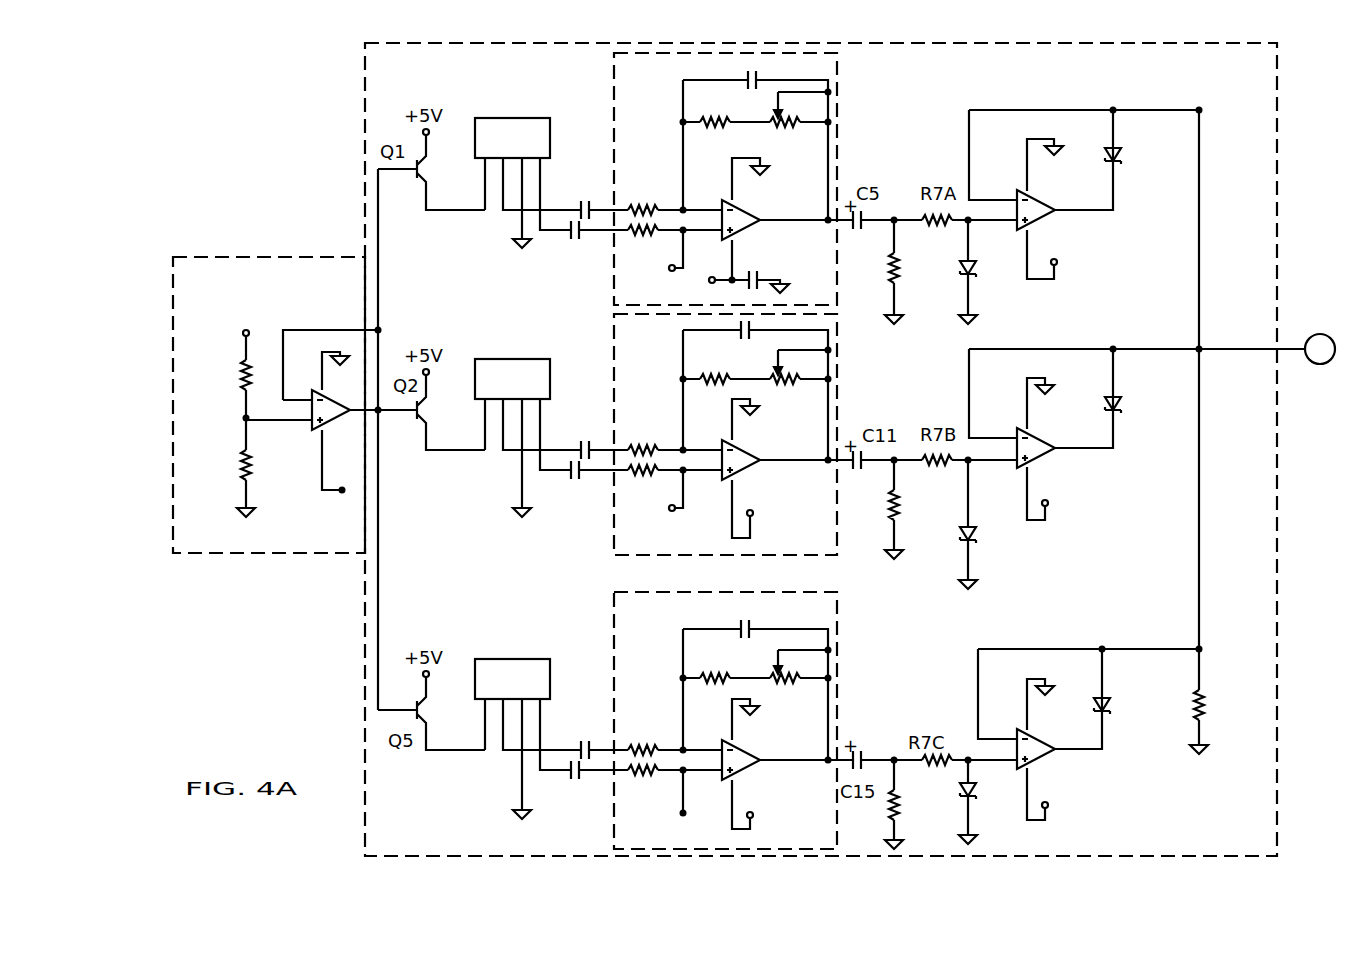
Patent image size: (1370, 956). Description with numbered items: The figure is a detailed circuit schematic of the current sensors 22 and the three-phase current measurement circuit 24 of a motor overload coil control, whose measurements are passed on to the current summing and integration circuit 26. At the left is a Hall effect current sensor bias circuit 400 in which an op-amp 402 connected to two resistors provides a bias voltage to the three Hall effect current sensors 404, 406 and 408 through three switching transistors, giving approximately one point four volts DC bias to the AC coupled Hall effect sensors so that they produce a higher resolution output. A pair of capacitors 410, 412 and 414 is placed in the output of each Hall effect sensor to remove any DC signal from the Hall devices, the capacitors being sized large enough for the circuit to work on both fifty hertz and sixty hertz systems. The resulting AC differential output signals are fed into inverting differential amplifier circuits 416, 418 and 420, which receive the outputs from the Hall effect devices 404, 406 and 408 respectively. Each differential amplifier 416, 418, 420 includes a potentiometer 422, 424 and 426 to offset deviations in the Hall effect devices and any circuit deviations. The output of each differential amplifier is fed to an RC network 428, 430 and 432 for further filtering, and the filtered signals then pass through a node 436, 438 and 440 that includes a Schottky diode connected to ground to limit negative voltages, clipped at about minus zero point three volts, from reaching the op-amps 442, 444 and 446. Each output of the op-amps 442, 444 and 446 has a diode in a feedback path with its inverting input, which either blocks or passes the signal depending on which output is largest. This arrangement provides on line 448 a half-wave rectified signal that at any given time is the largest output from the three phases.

The current sensor 22 is at (764, 449).
The three-phase current measurement circuit 24 is at (764, 449).
The current summing and integration circuit 26 is at (365, 62).
The Hall effect current sensor bias circuit 400 is at (277, 435).
The op-amp 402 is at (318, 432).
The Hall effect current sensor 404 is at (528, 118).
The Hall effect current sensor 406 is at (530, 359).
The Hall effect current sensor 408 is at (534, 659).
The pair of capacitors 410 is at (545, 250).
The pair of capacitors 412 is at (568, 505).
The pair of capacitors 414 is at (573, 810).
The inverting differential amplifier circuit 416 is at (713, 179).
The inverting differential amplifier circuit 418 is at (731, 434).
The inverting differential amplifier circuit 420 is at (724, 720).
The potentiometer 422 is at (806, 102).
The potentiometer 424 is at (806, 361).
The potentiometer 426 is at (806, 661).
The RC network 428 is at (862, 245).
The RC network 430 is at (882, 530).
The RC network 432 is at (878, 800).
The node 436 is at (950, 275).
The node 438 is at (980, 546).
The node 440 is at (947, 803).
The op-amp 442 is at (1052, 220).
The op-amp 444 is at (1052, 458).
The op-amp 446 is at (1052, 760).
The line 448 is at (1256, 349).